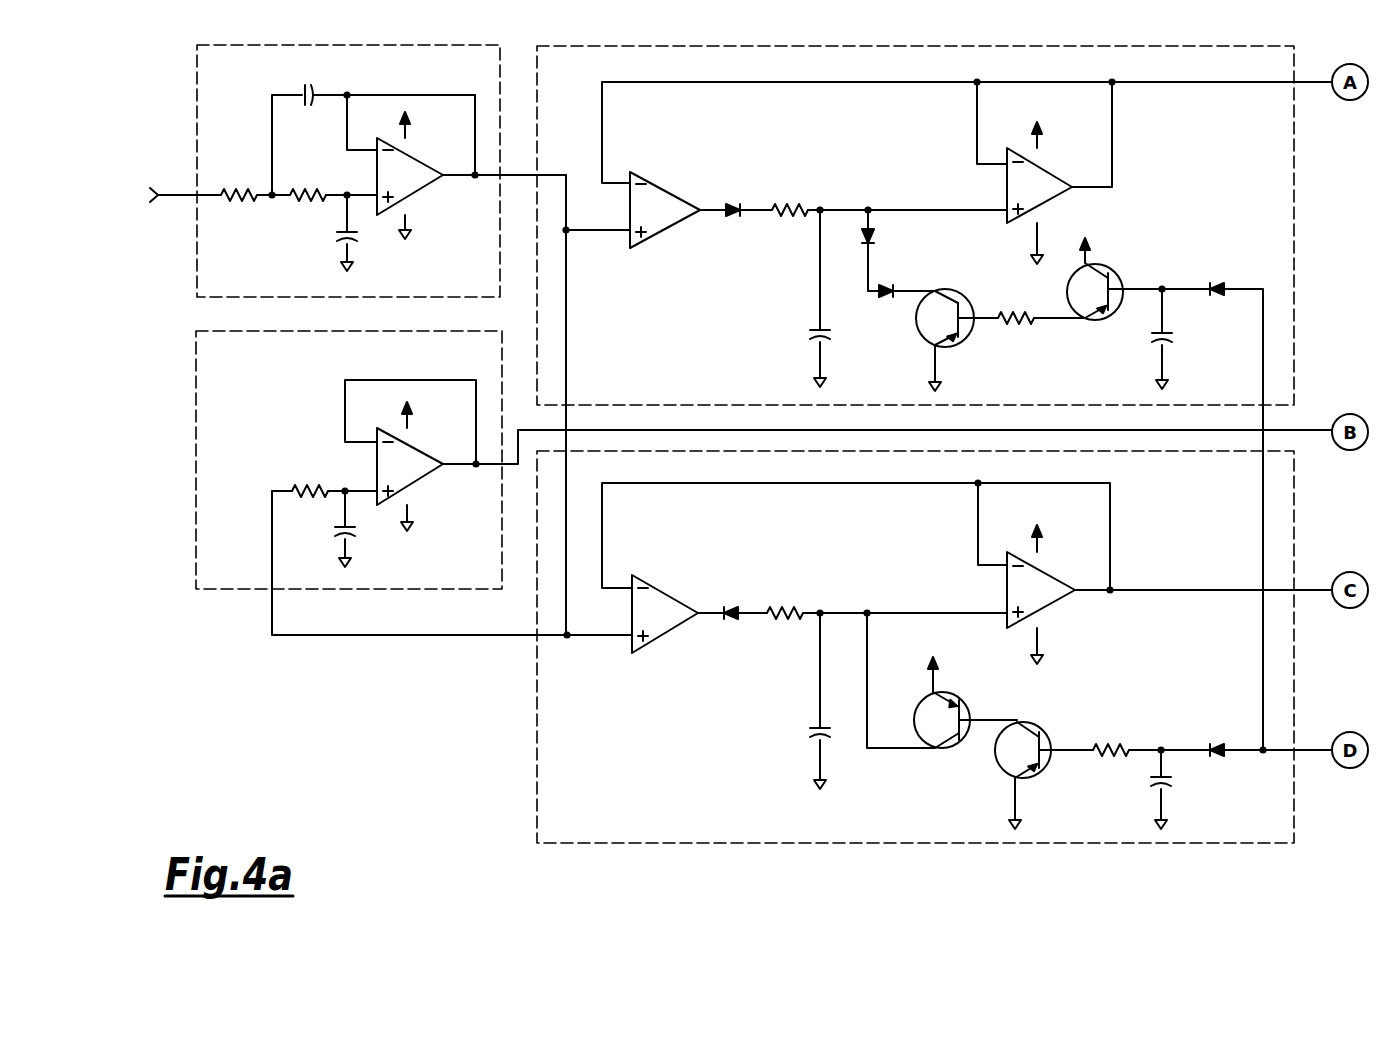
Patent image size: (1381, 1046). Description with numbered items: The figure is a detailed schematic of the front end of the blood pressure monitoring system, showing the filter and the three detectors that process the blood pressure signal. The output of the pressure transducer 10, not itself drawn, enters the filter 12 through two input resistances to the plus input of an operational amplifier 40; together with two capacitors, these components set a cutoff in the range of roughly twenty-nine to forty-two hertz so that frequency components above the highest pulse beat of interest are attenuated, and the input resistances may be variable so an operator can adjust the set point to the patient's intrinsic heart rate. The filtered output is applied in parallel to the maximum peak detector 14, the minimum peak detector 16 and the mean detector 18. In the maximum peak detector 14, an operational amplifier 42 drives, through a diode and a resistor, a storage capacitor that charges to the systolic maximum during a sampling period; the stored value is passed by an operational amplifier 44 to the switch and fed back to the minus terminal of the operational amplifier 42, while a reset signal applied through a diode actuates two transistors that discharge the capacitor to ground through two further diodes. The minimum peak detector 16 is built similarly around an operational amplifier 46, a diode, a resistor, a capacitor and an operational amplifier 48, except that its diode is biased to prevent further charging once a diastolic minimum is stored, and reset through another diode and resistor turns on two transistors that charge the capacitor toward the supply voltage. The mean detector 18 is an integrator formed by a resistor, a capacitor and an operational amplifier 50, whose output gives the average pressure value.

The pressure transducer 10 is at (128, 197).
The filter 12 is at (301, 171).
The maximum peak detector 14 is at (913, 398).
The minimum peak detector 16 is at (911, 647).
The mean detector 18 is at (740, 483).
The operational amplifier 40 is at (417, 158).
The operational amplifier 42 is at (664, 178).
The operational amplifier 44 is at (1046, 175).
The operational amplifier 46 is at (655, 575).
The operational amplifier 48 is at (1046, 578).
The operational amplifier 50 is at (418, 480).